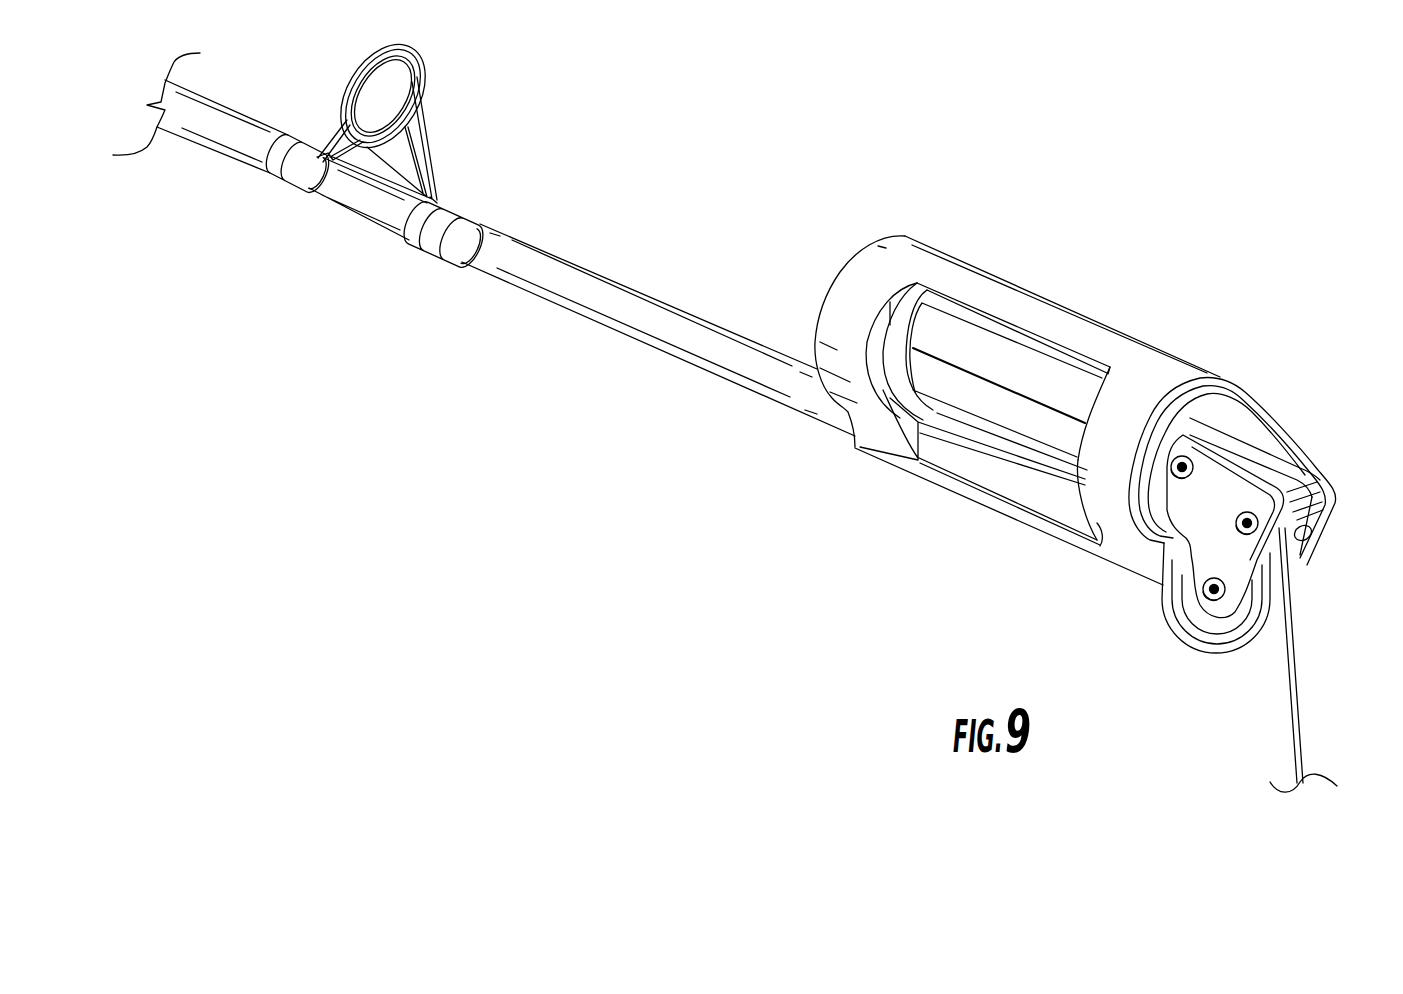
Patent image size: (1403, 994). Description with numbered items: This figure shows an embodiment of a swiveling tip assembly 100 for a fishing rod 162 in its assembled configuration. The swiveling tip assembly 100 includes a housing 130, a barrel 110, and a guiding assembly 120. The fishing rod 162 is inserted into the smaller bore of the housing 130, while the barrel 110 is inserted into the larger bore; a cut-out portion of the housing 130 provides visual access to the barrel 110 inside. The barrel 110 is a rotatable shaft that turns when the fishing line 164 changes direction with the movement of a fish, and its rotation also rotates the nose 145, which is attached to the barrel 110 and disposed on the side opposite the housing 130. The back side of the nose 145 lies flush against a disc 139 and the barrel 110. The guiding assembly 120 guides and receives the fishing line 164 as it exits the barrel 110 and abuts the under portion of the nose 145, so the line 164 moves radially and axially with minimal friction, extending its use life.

The swiveling tip assembly 100 is at (941, 222).
The barrel 110 is at (993, 348).
The guiding assembly 120 is at (1273, 493).
The housing 130 is at (1158, 360).
The disc 139 is at (1197, 406).
The nose 145 is at (1263, 453).
The fishing rod 162 is at (583, 266).
The fishing line 164 is at (1302, 737).